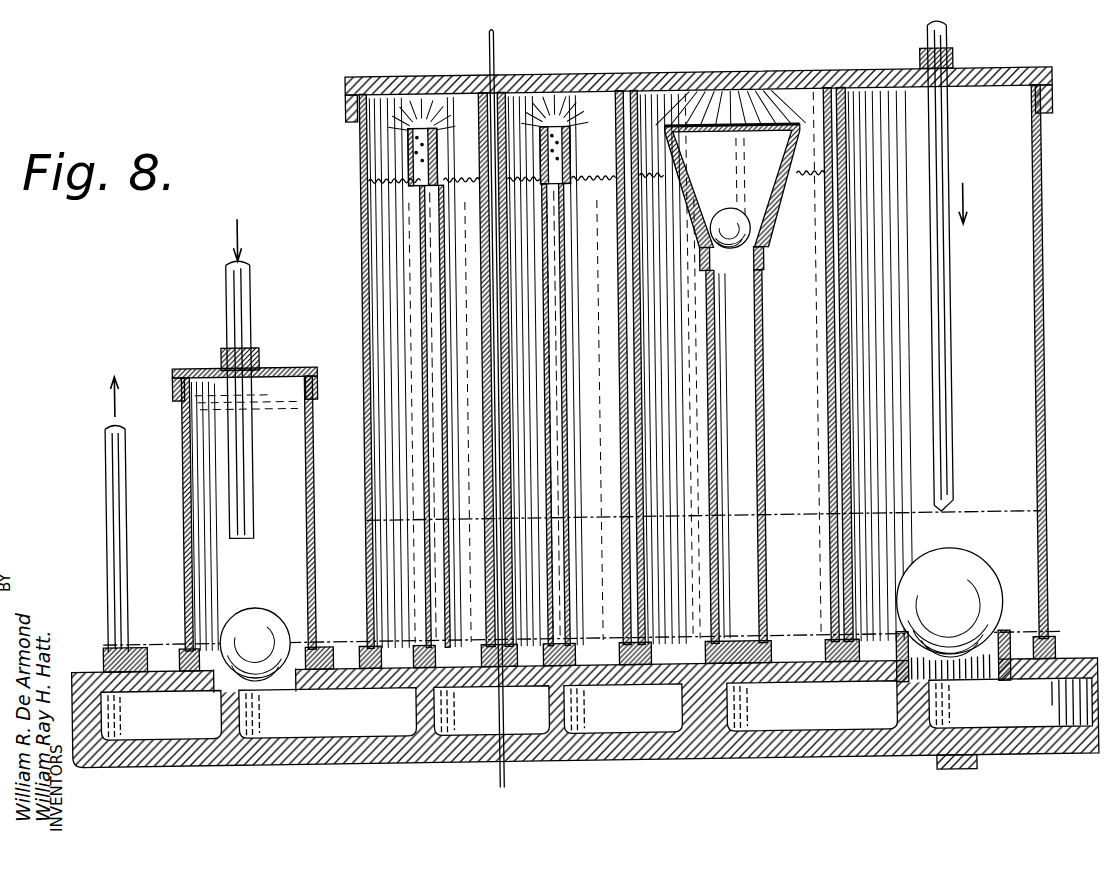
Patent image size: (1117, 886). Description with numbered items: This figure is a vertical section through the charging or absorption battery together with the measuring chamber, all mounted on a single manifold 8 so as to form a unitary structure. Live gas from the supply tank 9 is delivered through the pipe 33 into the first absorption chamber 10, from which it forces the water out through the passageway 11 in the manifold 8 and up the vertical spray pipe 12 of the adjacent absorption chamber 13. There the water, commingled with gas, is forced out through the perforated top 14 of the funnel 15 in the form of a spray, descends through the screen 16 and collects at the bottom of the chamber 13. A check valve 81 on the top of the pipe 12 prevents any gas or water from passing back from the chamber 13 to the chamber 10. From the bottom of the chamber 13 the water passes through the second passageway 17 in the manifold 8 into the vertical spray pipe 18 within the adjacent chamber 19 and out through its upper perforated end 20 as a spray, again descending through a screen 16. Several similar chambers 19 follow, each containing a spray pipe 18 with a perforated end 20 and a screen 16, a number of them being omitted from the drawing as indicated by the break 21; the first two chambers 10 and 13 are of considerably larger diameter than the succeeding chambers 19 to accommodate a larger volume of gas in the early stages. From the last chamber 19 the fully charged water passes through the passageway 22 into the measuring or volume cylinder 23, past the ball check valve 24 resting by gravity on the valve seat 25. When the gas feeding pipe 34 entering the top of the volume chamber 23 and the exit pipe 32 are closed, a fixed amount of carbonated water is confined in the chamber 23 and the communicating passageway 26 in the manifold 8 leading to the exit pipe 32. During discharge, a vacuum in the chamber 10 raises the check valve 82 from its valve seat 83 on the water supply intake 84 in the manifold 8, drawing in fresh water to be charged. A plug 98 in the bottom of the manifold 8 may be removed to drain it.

The manifold 8 is at (825, 762).
The supply tank 9 is at (699, 95).
The first absorption chamber 10 is at (942, 363).
The passageway 11 is at (812, 706).
The vertical spray pipe 12 is at (762, 457).
The absorption chamber 13 is at (734, 366).
The perforated top 14 is at (779, 180).
The funnel 15 is at (766, 240).
The screen 16 is at (455, 182).
The second passageway 17 is at (558, 710).
The vertical spray pipe 18 is at (432, 465).
The absorption chamber 19 is at (495, 370).
The perforated end 20 is at (441, 146).
The break 21 is at (499, 32).
The passageway 22 is at (328, 713).
The measuring or volume cylinder 23 is at (313, 472).
The ball check valve 24 is at (255, 618).
The valve seat 25 is at (318, 665).
The communicating passageway 26 is at (161, 716).
The exit pipe 32 is at (105, 447).
The pipe 33 is at (933, 48).
The gas feeding pipe 34 is at (252, 300).
The check valve 81 is at (733, 212).
The check valve 82 is at (950, 590).
The valve seat 83 is at (1005, 642).
The water supply intake 84 is at (1011, 703).
The plug 98 is at (975, 775).